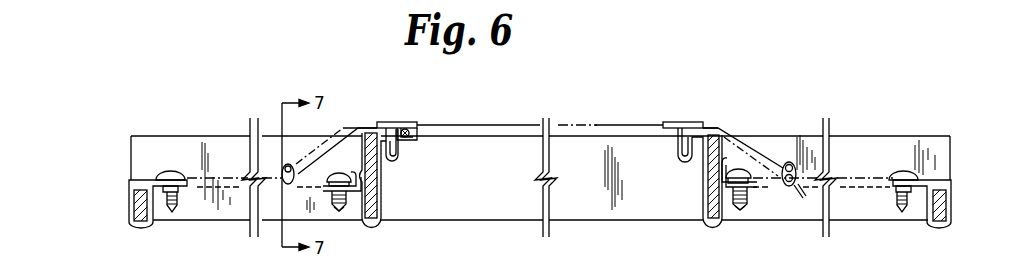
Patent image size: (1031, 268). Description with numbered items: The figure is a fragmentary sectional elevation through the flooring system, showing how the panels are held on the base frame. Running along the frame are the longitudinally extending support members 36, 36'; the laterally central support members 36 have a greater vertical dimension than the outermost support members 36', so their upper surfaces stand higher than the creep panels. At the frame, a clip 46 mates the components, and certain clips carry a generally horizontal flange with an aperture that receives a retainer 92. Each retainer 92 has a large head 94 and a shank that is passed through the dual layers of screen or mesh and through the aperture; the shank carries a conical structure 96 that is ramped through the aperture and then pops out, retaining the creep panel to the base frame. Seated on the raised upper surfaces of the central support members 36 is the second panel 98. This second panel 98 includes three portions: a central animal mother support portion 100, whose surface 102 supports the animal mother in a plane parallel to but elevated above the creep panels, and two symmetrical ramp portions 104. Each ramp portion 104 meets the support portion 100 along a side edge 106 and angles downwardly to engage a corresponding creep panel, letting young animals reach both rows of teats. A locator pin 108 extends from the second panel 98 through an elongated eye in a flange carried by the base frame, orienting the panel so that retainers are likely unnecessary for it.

The support member 36 is at (542, 190).
The outermost support member 36' is at (535, 197).
The clip 46 is at (152, 225).
The retainer 92 is at (166, 162).
The large head 94 is at (353, 171).
The conical structure 96 is at (332, 206).
The second panel 98 is at (418, 114).
The animal mother support portion 100 is at (386, 122).
The surface 102 is at (416, 125).
The ramp portion 104 is at (320, 134).
The side edge 106 is at (368, 131).
The locator pin 108 is at (399, 148).